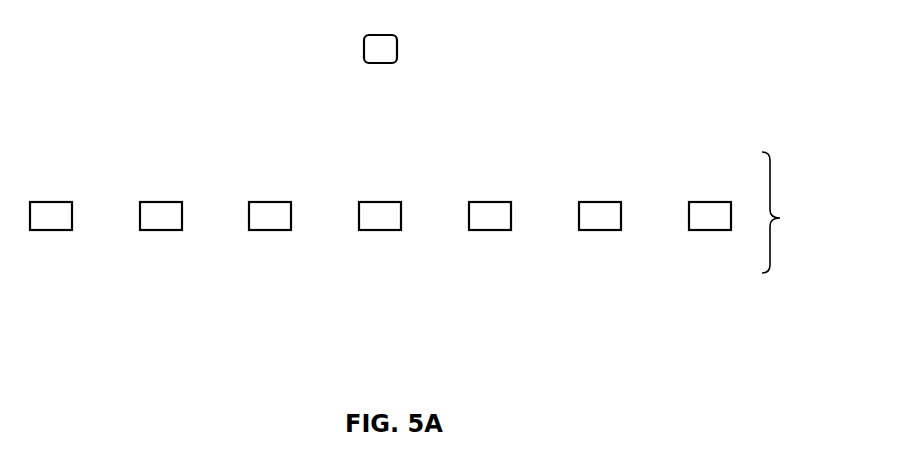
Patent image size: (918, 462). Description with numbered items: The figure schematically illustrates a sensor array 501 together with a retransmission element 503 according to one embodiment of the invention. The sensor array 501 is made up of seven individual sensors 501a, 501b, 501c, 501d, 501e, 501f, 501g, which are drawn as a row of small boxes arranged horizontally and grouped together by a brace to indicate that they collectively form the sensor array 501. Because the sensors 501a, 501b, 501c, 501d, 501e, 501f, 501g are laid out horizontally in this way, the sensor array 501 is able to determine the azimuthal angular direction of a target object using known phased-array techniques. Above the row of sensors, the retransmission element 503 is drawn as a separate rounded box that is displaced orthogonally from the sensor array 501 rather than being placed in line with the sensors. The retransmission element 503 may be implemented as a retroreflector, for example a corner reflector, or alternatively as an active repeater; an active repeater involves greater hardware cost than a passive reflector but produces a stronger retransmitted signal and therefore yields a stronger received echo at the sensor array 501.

The sensor array 501 is at (795, 212).
The sensor 501a is at (52, 230).
The sensor 501b is at (162, 230).
The sensor 501c is at (271, 230).
The sensor 501d is at (381, 230).
The sensor 501e is at (491, 230).
The sensor 501f is at (601, 230).
The sensor 501g is at (711, 230).
The retransmission element 503 is at (397, 48).